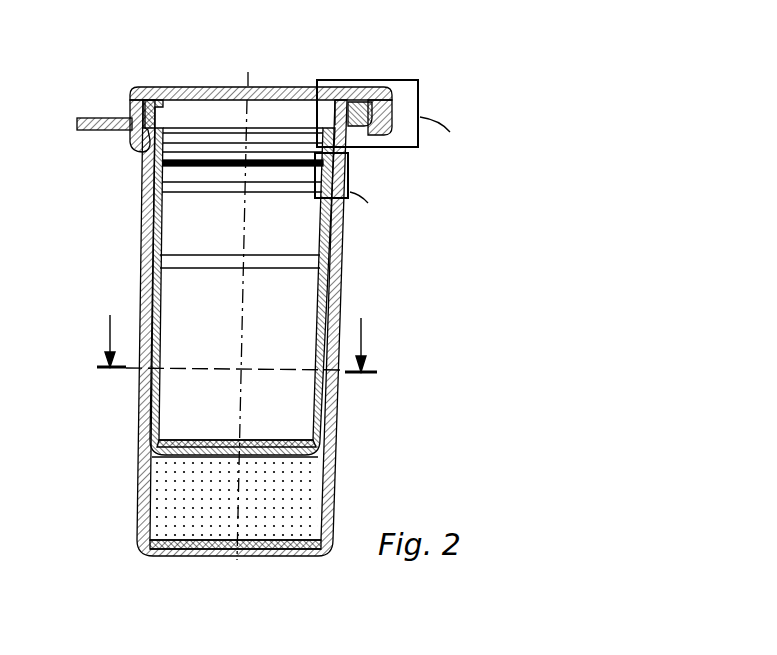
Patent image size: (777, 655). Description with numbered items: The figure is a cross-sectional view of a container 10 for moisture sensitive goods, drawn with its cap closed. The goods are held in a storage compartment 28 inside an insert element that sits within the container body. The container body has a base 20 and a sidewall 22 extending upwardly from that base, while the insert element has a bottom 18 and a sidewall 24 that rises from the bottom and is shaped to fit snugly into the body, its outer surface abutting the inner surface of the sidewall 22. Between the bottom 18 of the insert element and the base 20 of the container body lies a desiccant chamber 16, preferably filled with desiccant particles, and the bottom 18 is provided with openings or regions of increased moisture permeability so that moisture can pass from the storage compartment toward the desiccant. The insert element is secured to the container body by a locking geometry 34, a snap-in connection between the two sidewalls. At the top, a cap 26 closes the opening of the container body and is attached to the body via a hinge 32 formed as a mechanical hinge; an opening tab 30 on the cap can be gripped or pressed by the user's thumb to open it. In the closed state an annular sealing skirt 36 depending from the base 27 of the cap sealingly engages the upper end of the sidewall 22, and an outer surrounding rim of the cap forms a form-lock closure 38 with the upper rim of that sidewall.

The container 10 is at (108, 271).
The desiccant chamber 16 is at (283, 506).
The bottom of the insert element 18 is at (188, 456).
The base of the container body 20 is at (152, 553).
The sidewall of the container body 22 is at (330, 472).
The sidewall of the insert element 24 is at (343, 276).
The cap 26 is at (215, 86).
The base of the cap 27 is at (283, 86).
The storage compartment 28 is at (222, 233).
The opening tab 30 is at (93, 118).
The hinge 32 is at (397, 91).
The locking geometry 34 is at (350, 168).
The sealing skirt 36 is at (165, 101).
The form-lock closure 38 is at (133, 105).